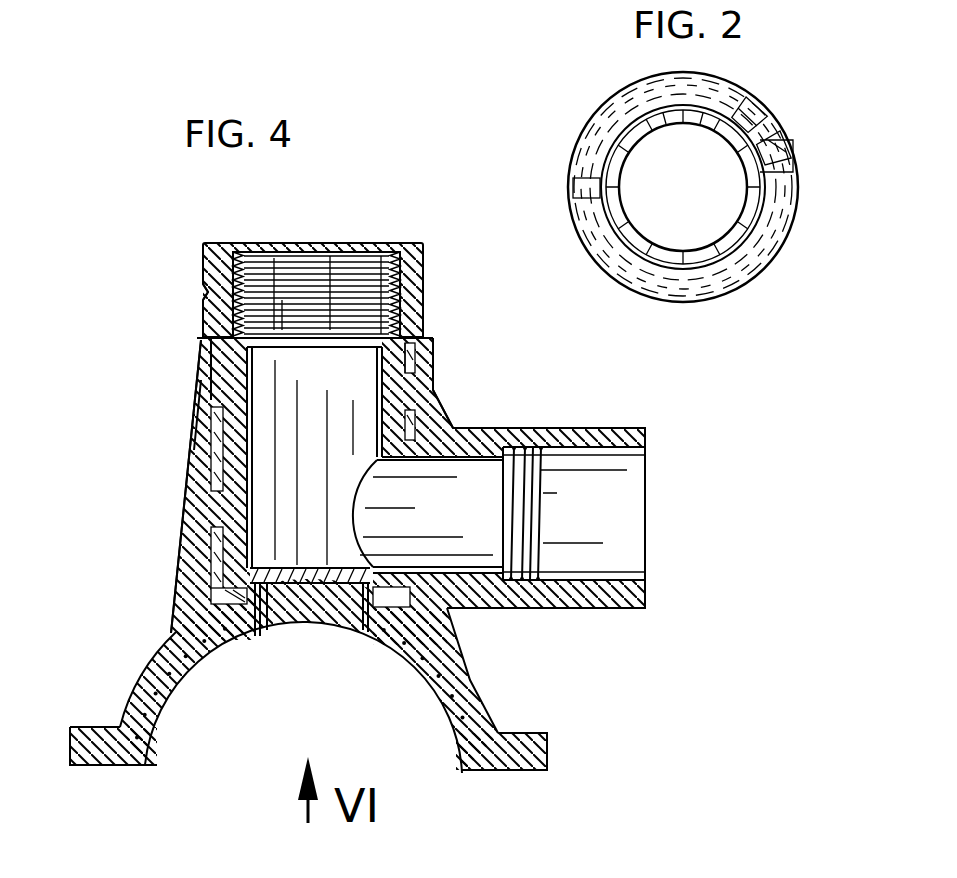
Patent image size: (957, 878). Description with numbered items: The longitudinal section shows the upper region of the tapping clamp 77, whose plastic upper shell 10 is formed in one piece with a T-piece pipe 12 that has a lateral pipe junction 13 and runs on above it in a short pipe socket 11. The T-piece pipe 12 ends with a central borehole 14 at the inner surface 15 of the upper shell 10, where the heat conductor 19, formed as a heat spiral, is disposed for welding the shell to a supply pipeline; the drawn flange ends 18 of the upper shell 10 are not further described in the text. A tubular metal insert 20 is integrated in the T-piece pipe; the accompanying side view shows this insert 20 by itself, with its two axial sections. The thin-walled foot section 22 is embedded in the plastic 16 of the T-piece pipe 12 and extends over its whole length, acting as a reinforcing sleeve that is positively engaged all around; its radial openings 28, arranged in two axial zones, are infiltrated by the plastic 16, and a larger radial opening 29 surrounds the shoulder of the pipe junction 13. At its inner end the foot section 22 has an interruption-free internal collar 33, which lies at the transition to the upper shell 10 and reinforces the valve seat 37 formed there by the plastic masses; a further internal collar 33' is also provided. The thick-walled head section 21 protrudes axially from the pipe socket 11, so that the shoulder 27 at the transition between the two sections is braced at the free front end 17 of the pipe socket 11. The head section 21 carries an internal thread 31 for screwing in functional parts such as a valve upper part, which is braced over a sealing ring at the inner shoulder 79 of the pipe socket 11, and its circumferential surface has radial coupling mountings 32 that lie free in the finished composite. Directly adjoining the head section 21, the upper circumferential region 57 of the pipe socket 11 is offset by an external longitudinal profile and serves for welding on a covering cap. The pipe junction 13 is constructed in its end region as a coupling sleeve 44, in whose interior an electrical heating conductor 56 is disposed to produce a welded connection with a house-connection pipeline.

In FIG. 4, the upper shell 10 is at (474, 672).
In FIG. 4, the pipe socket 11 is at (490, 347).
In FIG. 4, the T-piece pipe 12 is at (165, 633).
In FIG. 4, the pipe junction 13 is at (492, 436).
In FIG. 4, the central borehole 14 is at (322, 614).
In FIG. 4, the inner surface 15 is at (440, 697).
In FIG. 4, the plastic 16 is at (196, 463).
In FIG. 4, the free front end 17 is at (199, 337).
In FIG. 4, the mounting foot 18 is at (532, 746).
In FIG. 4, the heat conductor 19 is at (178, 698).
In FIG. 4, the metal insert 20 is at (199, 244).
In FIG. 2, the metal insert 20 is at (579, 96).
In FIG. 4, the head section 21 is at (437, 247).
In FIG. 2, the head section 21 is at (799, 210).
In FIG. 2, the foot section 22 is at (743, 89).
In FIG. 4, the shoulder 27 is at (381, 358).
In FIG. 4, the radial openings 28 is at (207, 520).
In FIG. 2, the radial openings 28 is at (764, 118).
In FIG. 4, the radial opening 29 is at (436, 447).
In FIG. 4, the internal thread 31 is at (253, 246).
In FIG. 4, the coupling mountings 32 is at (201, 297).
In FIG. 4, the internal collar 33 is at (188, 581).
In FIG. 4, the internal collar 33' is at (310, 259).
In FIG. 4, the valve seat 37 is at (362, 590).
In FIG. 4, the coupling sleeve 44 is at (626, 489).
In FIG. 4, the electrical heating conductor 56 is at (548, 517).
In FIG. 4, the circumferential region 57 is at (195, 342).
In FIG. 4, the tapping clamp 77 is at (387, 231).
In FIG. 4, the inner shoulder 79 is at (301, 349).